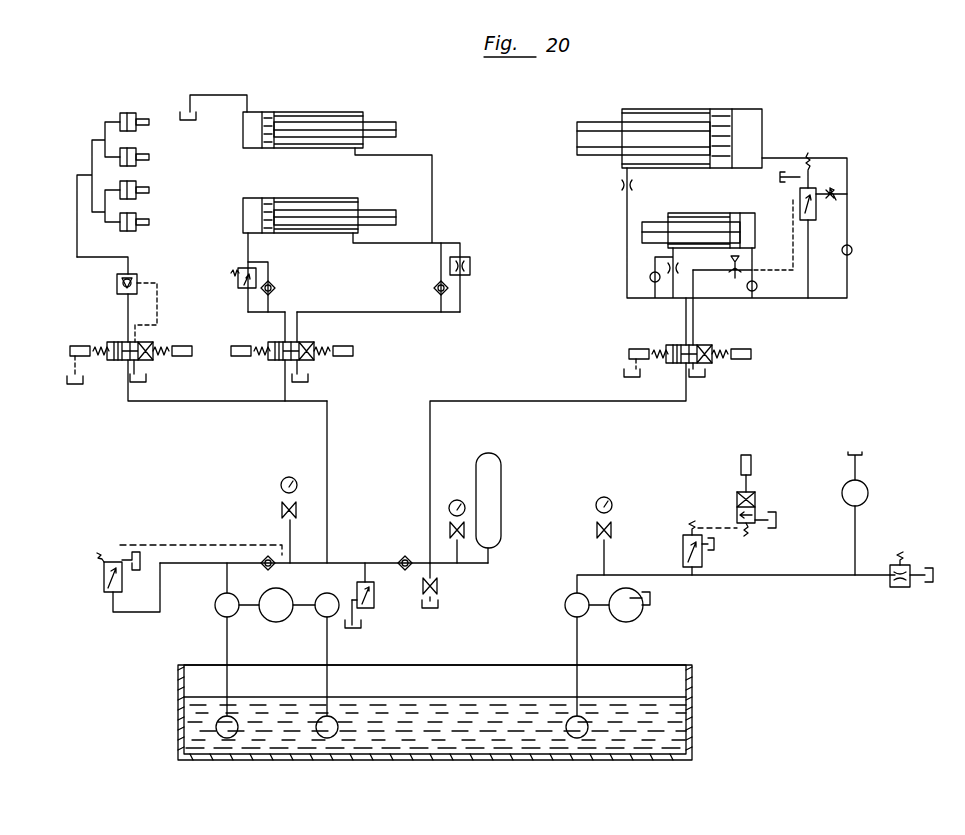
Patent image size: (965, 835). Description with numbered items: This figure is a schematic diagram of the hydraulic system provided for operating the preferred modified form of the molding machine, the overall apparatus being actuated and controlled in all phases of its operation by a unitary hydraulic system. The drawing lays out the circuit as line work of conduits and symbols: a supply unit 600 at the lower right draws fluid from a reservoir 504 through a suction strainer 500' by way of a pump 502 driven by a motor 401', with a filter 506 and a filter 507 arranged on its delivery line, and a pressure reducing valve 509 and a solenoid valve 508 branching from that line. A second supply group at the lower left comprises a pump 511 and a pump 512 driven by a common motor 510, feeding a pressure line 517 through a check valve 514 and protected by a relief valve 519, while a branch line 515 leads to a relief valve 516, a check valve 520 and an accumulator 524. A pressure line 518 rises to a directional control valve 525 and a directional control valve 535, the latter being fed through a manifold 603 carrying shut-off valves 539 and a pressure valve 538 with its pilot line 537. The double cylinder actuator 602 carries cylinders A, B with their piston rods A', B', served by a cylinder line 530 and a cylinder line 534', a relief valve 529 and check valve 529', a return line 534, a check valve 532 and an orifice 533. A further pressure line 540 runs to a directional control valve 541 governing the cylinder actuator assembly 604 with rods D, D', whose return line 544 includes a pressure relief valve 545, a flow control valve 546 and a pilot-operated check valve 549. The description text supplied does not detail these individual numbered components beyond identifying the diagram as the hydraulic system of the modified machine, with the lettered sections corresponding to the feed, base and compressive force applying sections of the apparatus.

The double cylinder actuator 602 is at (313, 89).
The cylinder actuator assembly 604 is at (762, 84).
The manifold 603 is at (70, 163).
The shut-off valves 539 is at (161, 187).
The reservoir / tank 504 is at (177, 116).
The pressure valve 538 is at (116, 285).
The pilot line 537 is at (150, 282).
The cylinder line 530 is at (246, 244).
The relief valve 529 is at (230, 295).
The check valve 529' is at (295, 287).
The return line 534 is at (354, 282).
The cylinder line 534' is at (427, 230).
The check valve 532 is at (432, 290).
The orifice 533 is at (472, 265).
The directional control valve 535 is at (138, 402).
The directional control valve 525 is at (313, 402).
The pressure line 518 is at (329, 473).
The pressure line 540 is at (433, 431).
The directional control valve 541 is at (732, 370).
The return line 544 is at (795, 298).
The pressure relief valve 545 is at (830, 185).
The flow control valve 546 is at (820, 216).
The pilot-operated check valve 549 is at (744, 274).
The pressure relief valve 519 is at (104, 578).
The check valve 514 is at (262, 556).
The pressure line 517 is at (337, 560).
The branch line 515 is at (367, 563).
The check valve 520 is at (405, 569).
The relief valve 516 is at (375, 600).
The accumulator 524 is at (503, 490).
The pump 511 is at (220, 613).
The motor 510 is at (275, 617).
The pump 512 is at (320, 617).
The pump 502 is at (565, 605).
The motor 401' is at (653, 610).
The pressure reducing valve 509 is at (680, 543).
The solenoid valve 508 is at (757, 500).
The filter 506 is at (866, 500).
The hydraulic supply unit 600 is at (891, 486).
The filter 507 is at (892, 588).
The suction strainer 500' is at (419, 750).
The injection transfer-mold feed section A is at (350, 183).
The injection transfer-mold feed section A' is at (394, 189).
The base machine section B is at (368, 91).
The base machine section B' is at (408, 98).
The compressive force applying section D is at (582, 102).
The compressive force applying section D' is at (665, 199).